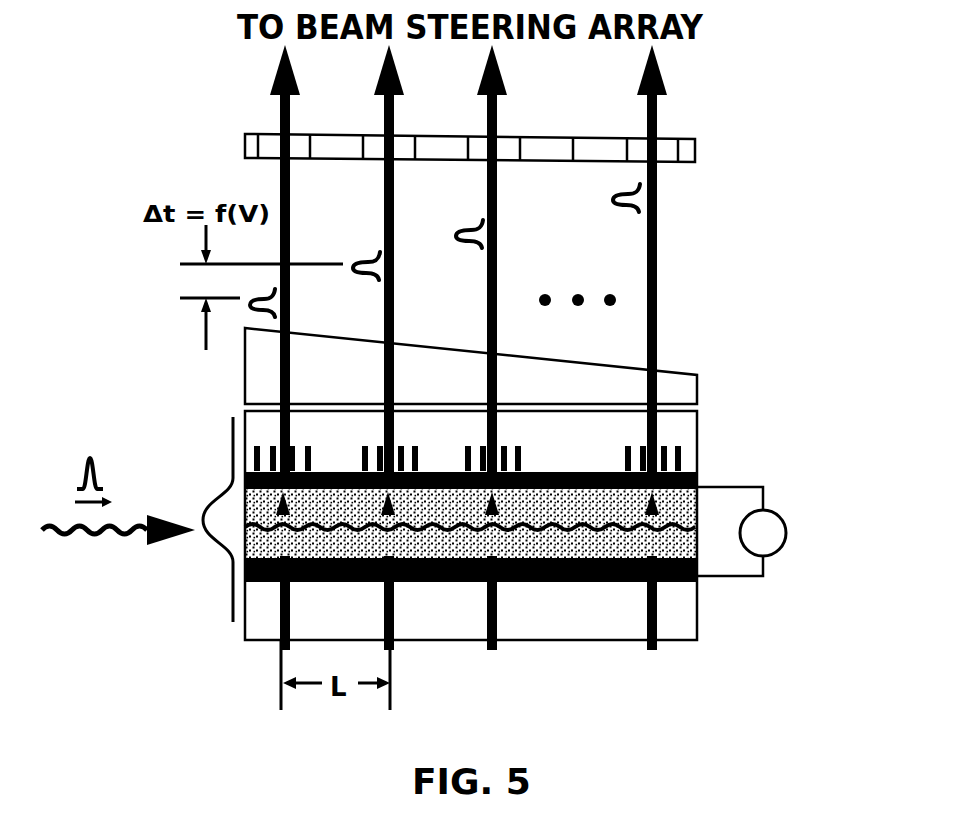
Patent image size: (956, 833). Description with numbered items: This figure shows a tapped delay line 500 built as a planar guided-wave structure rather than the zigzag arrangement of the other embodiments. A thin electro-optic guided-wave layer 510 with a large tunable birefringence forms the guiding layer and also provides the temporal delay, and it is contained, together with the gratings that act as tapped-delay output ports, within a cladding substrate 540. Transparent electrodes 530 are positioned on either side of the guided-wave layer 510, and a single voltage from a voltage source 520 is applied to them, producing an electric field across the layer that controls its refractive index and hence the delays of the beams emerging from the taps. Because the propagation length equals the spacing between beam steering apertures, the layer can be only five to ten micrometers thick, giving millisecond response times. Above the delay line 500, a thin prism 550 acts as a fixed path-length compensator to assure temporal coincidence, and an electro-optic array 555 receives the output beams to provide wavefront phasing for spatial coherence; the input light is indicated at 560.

The tapped delay line 500 is at (728, 400).
The guided-wave layer 510 is at (697, 522).
The voltage source 520 is at (782, 515).
The transparent electrodes 530 is at (697, 477).
The cladding substrate 540 is at (688, 445).
The thin prism 550 is at (676, 377).
The electro-optic array 555 is at (695, 150).
The input optical pulse 560 is at (220, 485).